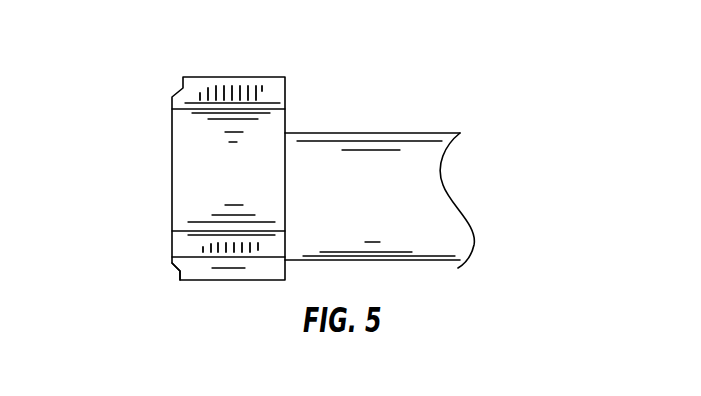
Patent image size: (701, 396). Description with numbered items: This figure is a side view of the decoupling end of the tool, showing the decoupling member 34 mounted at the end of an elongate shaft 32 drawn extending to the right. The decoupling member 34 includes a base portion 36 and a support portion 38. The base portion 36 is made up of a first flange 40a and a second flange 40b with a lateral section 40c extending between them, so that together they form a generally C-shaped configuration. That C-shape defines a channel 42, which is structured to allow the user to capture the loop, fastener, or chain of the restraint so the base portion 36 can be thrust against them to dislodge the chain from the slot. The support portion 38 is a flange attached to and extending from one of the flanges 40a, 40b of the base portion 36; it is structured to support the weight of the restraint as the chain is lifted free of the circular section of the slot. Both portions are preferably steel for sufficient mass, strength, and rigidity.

The tube 32 is at (420, 140).
The decoupling member 34 is at (145, 194).
The base portion 36 is at (183, 148).
The support portion 38 is at (192, 272).
The first flange 40a is at (285, 78).
The second flange 40b is at (222, 243).
The lateral section 40c is at (262, 147).
The channel 42 is at (203, 185).